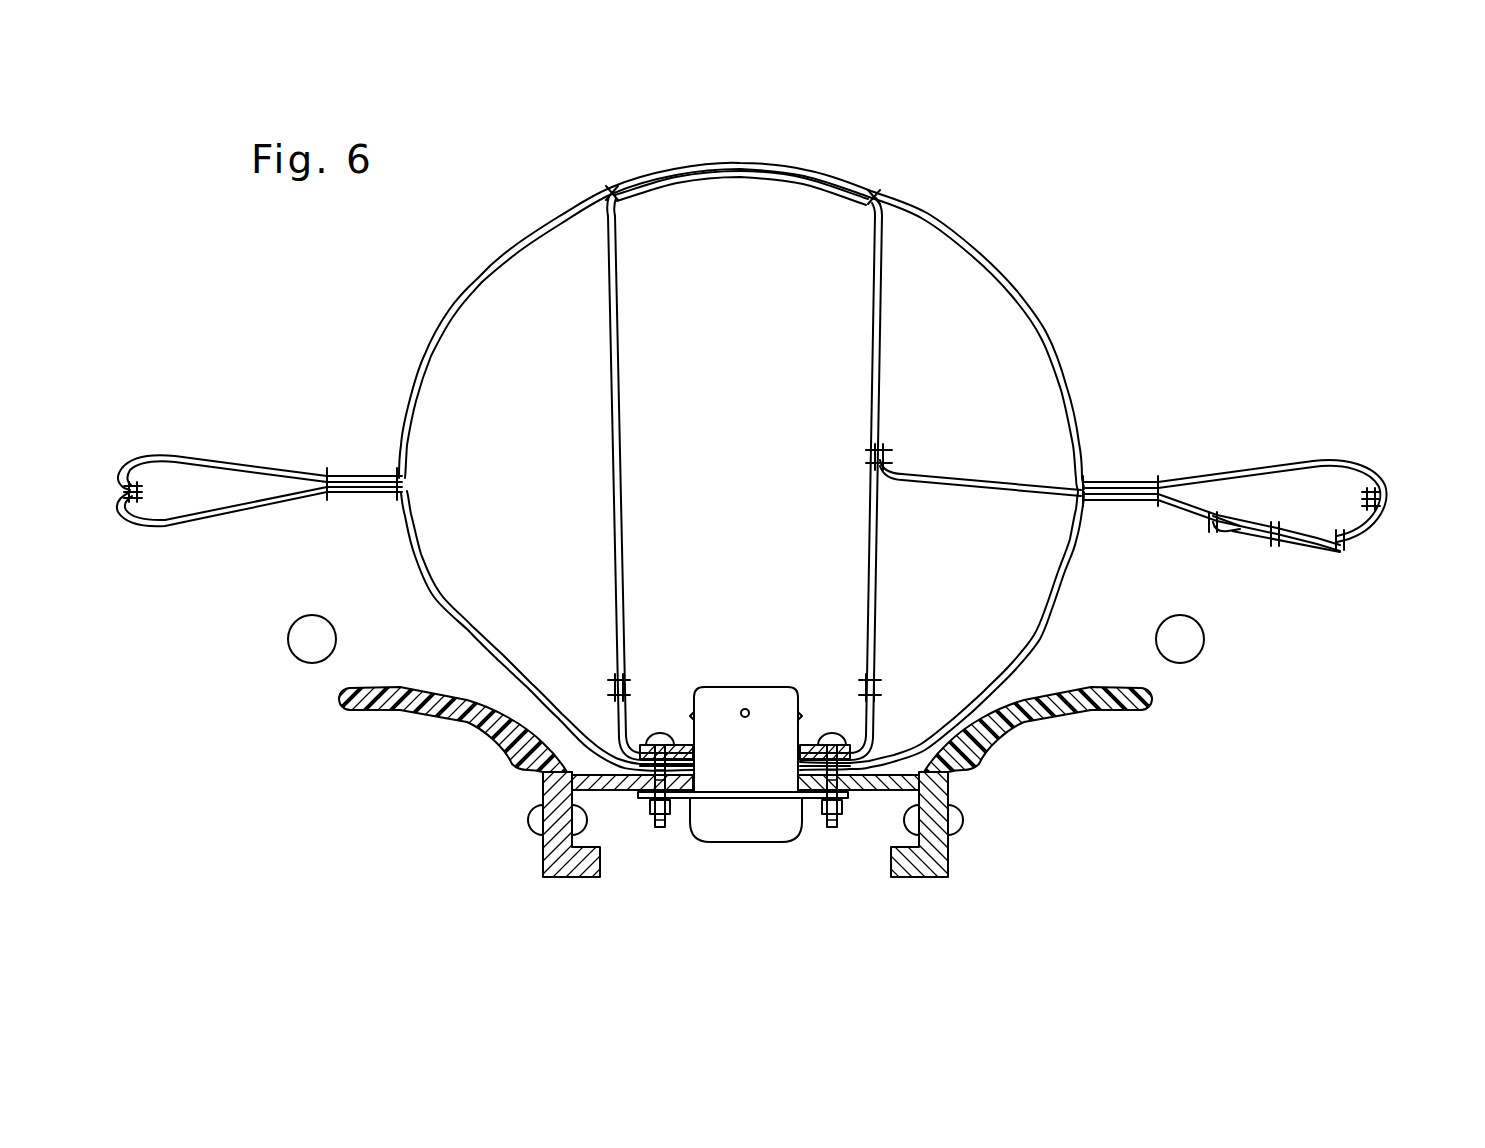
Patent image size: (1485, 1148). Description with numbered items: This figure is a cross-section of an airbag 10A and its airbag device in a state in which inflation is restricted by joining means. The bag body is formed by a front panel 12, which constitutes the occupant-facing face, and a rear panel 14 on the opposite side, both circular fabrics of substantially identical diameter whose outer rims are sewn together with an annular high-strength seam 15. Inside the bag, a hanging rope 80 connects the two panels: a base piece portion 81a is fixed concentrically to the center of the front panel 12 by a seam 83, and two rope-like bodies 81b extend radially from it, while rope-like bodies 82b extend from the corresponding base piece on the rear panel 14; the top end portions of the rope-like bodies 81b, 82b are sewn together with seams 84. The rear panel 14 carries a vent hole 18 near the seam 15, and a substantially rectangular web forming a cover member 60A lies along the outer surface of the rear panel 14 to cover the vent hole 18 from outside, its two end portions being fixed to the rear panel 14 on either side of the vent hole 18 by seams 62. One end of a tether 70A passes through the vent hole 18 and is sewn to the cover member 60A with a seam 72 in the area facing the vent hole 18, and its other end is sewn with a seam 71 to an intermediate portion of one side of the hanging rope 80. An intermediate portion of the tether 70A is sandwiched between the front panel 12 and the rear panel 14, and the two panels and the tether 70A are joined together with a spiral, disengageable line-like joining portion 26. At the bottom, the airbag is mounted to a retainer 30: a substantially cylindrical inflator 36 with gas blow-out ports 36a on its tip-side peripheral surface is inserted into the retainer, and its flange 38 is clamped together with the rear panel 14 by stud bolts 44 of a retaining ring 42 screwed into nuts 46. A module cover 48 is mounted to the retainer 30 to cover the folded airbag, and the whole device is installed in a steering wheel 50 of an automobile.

The airbag 10A is at (1048, 231).
The front panel 12 is at (1046, 328).
The rear panel 14 is at (440, 575).
The seam 15 is at (137, 482).
The vent hole 18 is at (1292, 520).
The line-like joining portion 26 is at (330, 470).
The retainer 30 is at (950, 785).
The inflator 36 is at (730, 777).
The gas blow-out ports 36a is at (700, 712).
The flange 38 is at (710, 800).
The retaining ring 42 is at (800, 745).
The stud bolts 44 is at (660, 832).
The nuts 46 is at (642, 820).
The module cover 48 is at (376, 705).
The steering wheel 50 is at (312, 663).
The cover member 60A is at (1300, 552).
The seam 62 is at (1210, 533).
The tether 70A is at (940, 474).
The seam 71 is at (868, 456).
The seam 72 is at (1274, 546).
The hanging rope 80 is at (725, 437).
The base piece portion 81a is at (742, 184).
The rope-like bodies 81b is at (615, 322).
The rope-like bodies 82b is at (878, 705).
The seam 83 is at (612, 188).
The seams 84 is at (612, 688).